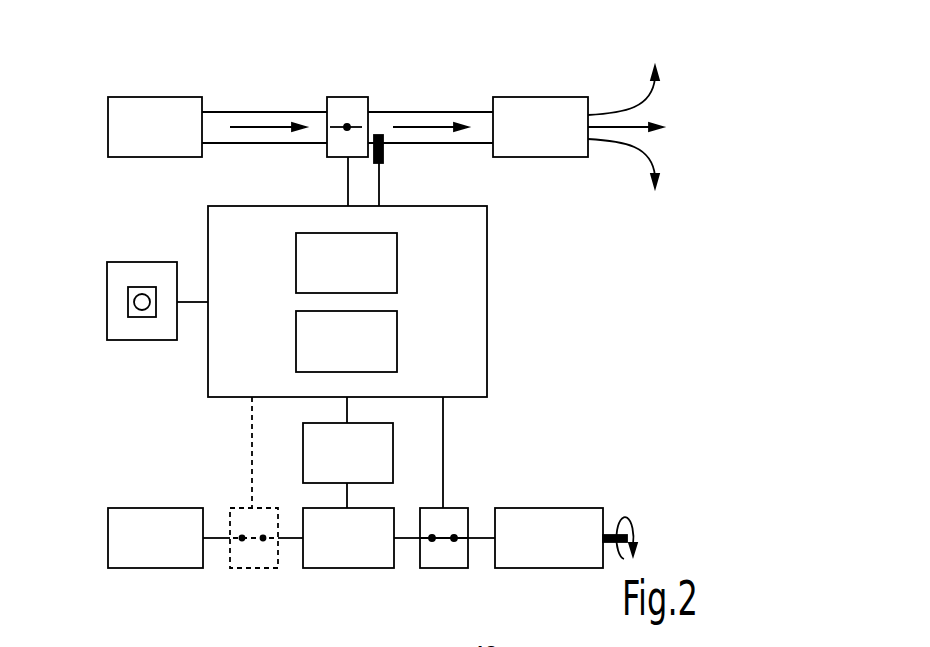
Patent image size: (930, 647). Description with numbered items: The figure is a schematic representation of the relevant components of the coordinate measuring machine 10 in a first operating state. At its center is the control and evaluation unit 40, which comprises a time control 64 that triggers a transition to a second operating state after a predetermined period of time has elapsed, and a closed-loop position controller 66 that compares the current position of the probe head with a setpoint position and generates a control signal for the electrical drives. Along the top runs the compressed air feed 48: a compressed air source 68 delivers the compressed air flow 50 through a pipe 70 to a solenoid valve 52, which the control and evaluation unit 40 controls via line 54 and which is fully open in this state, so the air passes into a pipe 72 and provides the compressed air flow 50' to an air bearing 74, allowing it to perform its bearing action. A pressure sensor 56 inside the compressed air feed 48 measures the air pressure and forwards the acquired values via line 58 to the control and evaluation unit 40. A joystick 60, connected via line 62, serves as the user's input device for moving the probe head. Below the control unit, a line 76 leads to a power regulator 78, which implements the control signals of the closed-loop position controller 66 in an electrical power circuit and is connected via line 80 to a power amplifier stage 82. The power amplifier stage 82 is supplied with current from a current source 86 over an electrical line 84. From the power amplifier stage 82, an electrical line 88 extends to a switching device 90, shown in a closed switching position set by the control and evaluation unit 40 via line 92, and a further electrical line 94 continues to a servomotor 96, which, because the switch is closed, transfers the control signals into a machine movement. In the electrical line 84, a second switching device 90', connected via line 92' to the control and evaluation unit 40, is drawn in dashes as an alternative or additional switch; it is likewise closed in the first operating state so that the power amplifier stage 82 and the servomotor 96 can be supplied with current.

The coordinate measuring machine 10 is at (700, 96).
The control and evaluation unit 40 is at (473, 290).
The compressed air feed 48 is at (421, 55).
The compressed air flow 50 is at (258, 155).
The compressed air flow 50' is at (439, 92).
The solenoid valve 52 is at (337, 103).
The line 54 is at (348, 190).
The pressure sensor 56 is at (385, 150).
The line 58 is at (379, 192).
The joystick 60 is at (120, 298).
The line 62 is at (195, 298).
The time control 64 is at (383, 272).
The closed-loop position controller 66 is at (387, 343).
The compressed air source 68 is at (150, 110).
The pipe 70 is at (217, 118).
The pipe 72 is at (380, 117).
The air bearing 74 is at (528, 110).
The line 76 is at (347, 415).
The power regulator 78 is at (370, 465).
The line 80 is at (350, 498).
The power amplifier stage 82 is at (348, 557).
The electrical line 84 is at (290, 540).
The current source 86 is at (162, 552).
The electrical line 88 is at (405, 542).
The switching device 90 is at (444, 577).
The second switching device 90' is at (215, 508).
The line 92 is at (489, 452).
The line 92' is at (205, 452).
The electrical line 94 is at (480, 542).
The servomotor 96 is at (557, 557).